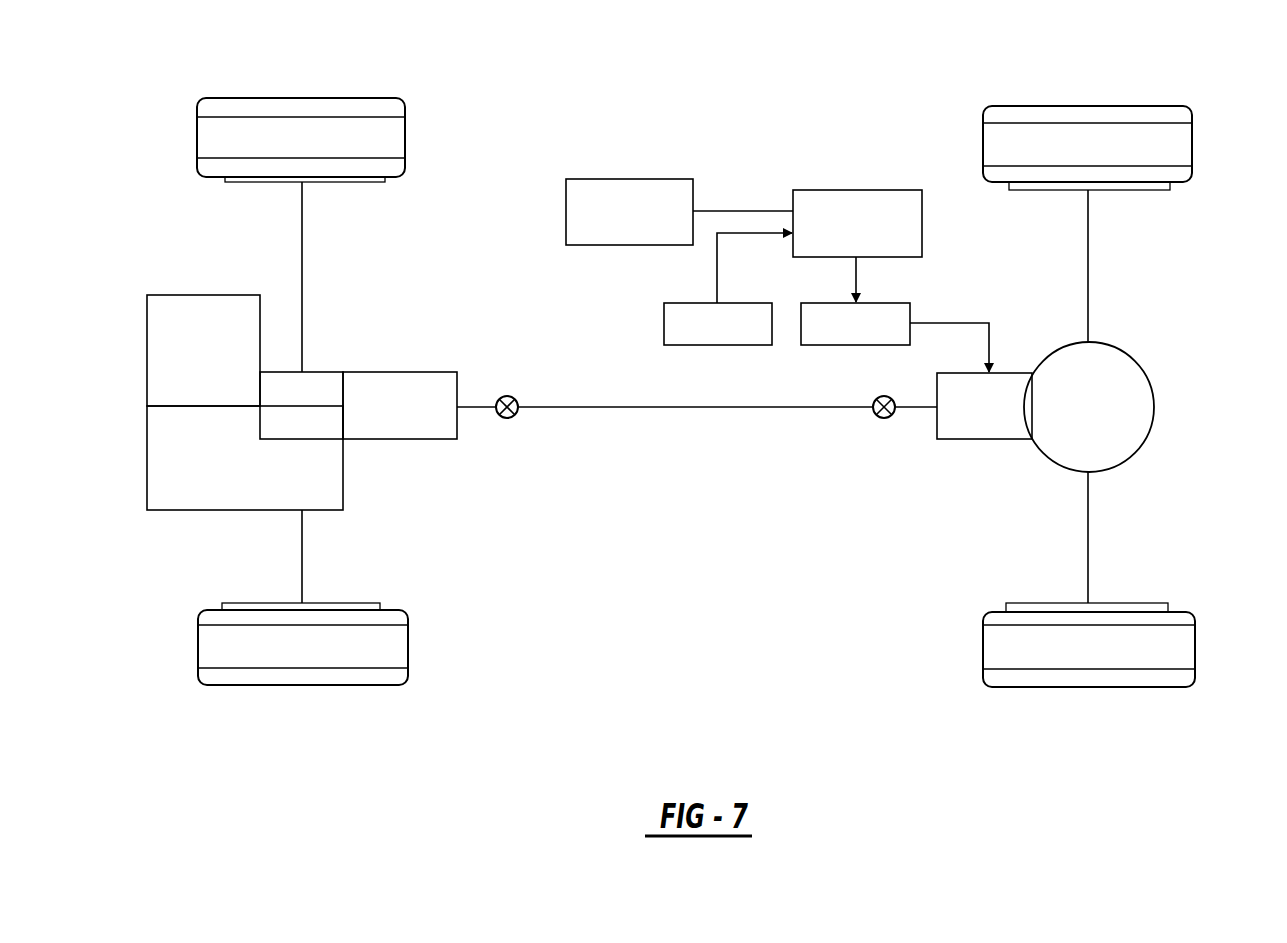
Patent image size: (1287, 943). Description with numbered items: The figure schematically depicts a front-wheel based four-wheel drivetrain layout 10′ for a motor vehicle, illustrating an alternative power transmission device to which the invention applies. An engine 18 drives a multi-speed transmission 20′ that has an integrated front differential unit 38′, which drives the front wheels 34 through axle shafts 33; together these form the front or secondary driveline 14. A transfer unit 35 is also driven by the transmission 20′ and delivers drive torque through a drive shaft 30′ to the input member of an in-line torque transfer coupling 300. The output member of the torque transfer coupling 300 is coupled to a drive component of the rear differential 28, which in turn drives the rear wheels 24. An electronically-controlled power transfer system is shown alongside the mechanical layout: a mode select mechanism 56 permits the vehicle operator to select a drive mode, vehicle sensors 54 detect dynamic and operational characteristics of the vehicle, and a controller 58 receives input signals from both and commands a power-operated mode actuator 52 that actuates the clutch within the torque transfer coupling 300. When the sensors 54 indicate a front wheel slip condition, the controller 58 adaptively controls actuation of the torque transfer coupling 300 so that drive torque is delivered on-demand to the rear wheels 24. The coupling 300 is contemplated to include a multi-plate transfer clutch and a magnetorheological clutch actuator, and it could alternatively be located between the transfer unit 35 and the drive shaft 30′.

The four-wheel drivetrain layout 10′ is at (701, 351).
The secondary driveline 14 is at (375, 310).
The engine 18 is at (213, 361).
The multi-speed transmission 20′ is at (220, 476).
The rear wheels 24 is at (1180, 145).
The rear differential 28 is at (1134, 402).
The drive shaft 30′ is at (652, 408).
The axle shafts 33 is at (302, 241).
The front wheels 34 is at (395, 138).
The transfer unit 35 is at (412, 415).
The integrated front differential unit 38′ is at (312, 415).
The mode actuator 52 is at (820, 315).
The vehicle sensors 54 is at (664, 322).
The mode select mechanism 56 is at (582, 207).
The controller 58 is at (857, 190).
The torque transfer coupling 300 is at (988, 418).